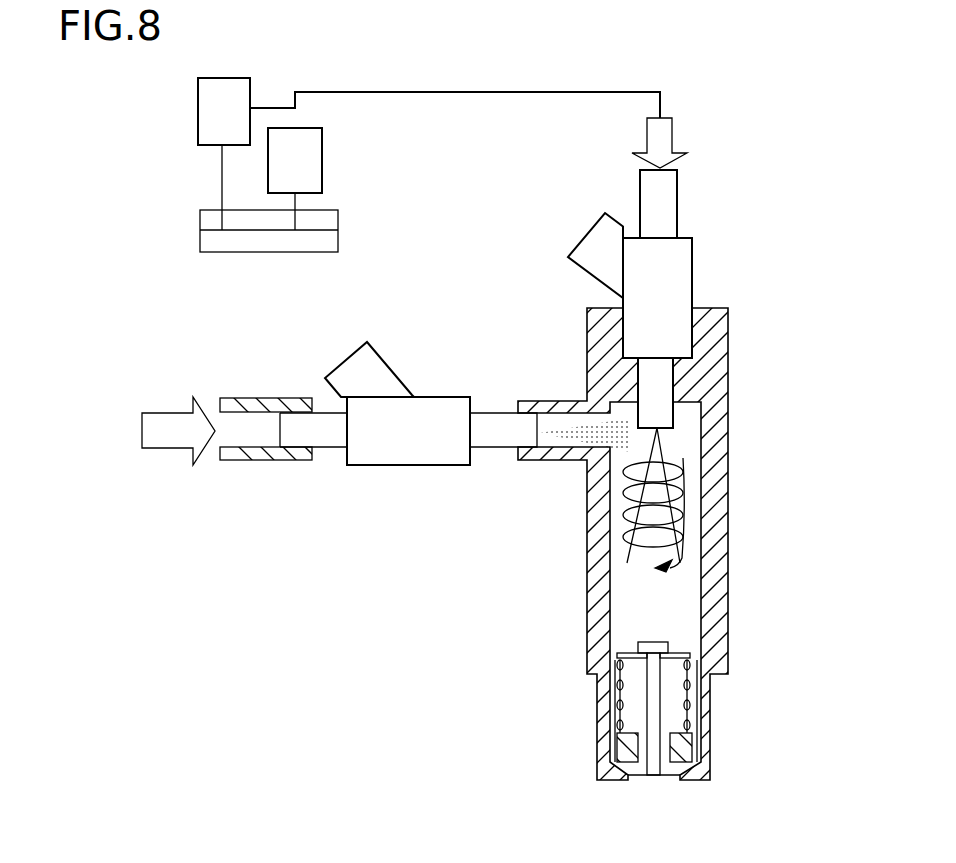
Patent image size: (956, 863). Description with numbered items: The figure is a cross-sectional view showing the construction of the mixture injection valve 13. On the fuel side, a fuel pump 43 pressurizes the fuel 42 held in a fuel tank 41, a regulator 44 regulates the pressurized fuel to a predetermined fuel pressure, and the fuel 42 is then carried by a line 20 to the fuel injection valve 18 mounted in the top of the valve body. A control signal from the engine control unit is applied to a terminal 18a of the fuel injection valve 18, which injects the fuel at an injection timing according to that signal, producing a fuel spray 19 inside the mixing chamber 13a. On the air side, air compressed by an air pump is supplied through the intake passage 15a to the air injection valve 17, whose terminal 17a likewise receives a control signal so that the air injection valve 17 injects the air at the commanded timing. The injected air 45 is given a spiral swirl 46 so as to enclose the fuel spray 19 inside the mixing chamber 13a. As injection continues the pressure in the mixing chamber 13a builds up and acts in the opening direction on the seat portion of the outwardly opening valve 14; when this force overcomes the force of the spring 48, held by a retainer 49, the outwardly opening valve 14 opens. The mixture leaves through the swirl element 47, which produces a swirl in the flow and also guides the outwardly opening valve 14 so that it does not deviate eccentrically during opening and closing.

The mixture injection valve 13 is at (712, 363).
The mixing chamber 13a is at (672, 610).
The outwardly opening valve 14 is at (653, 760).
The intake passage 15a is at (248, 432).
The air injection valve 17 is at (405, 443).
The terminal 17a is at (353, 368).
The fuel injection valve 18 is at (680, 265).
The terminal 18a is at (602, 240).
The fuel spray 19 is at (657, 458).
The air supply passage 20 is at (490, 92).
The fuel tank 41 is at (208, 215).
The fuel 42 is at (242, 252).
The fuel pump 43 is at (322, 170).
The regulator 44 is at (222, 78).
The air 45 is at (586, 437).
The swirl flow 46 is at (685, 508).
The swirl element 47 is at (675, 745).
The spring 48 is at (618, 707).
The spring retainer 49 is at (628, 650).